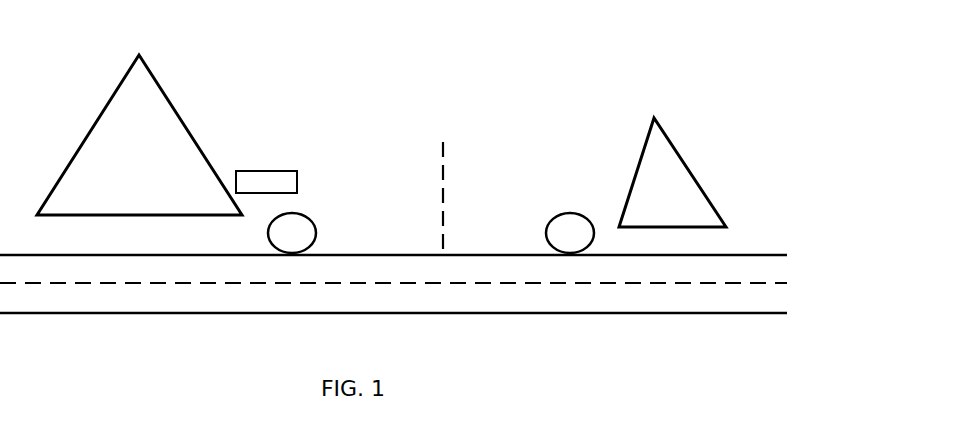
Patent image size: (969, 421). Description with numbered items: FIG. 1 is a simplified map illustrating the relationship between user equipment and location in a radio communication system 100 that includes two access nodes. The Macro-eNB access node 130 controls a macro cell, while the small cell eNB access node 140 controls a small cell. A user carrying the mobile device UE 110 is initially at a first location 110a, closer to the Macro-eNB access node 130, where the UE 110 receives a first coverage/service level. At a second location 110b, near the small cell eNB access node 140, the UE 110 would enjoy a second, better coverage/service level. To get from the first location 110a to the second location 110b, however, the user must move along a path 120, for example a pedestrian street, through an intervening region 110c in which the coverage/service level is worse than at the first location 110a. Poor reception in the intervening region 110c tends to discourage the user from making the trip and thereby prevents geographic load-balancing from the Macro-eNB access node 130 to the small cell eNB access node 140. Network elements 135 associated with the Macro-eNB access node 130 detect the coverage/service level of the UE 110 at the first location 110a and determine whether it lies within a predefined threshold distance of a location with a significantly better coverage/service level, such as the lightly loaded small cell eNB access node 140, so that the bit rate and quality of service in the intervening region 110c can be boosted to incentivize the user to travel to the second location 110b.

The radio communication system 100 is at (481, 76).
The mobile device UE 110 is at (430, 303).
The first location 110a is at (292, 255).
The second location 110b is at (571, 262).
The intervening region 110c is at (443, 204).
The path 120 is at (160, 314).
The Macro-eNB access node 130 is at (183, 129).
The network elements 135 is at (285, 191).
The small cell eNB access node 140 is at (702, 188).